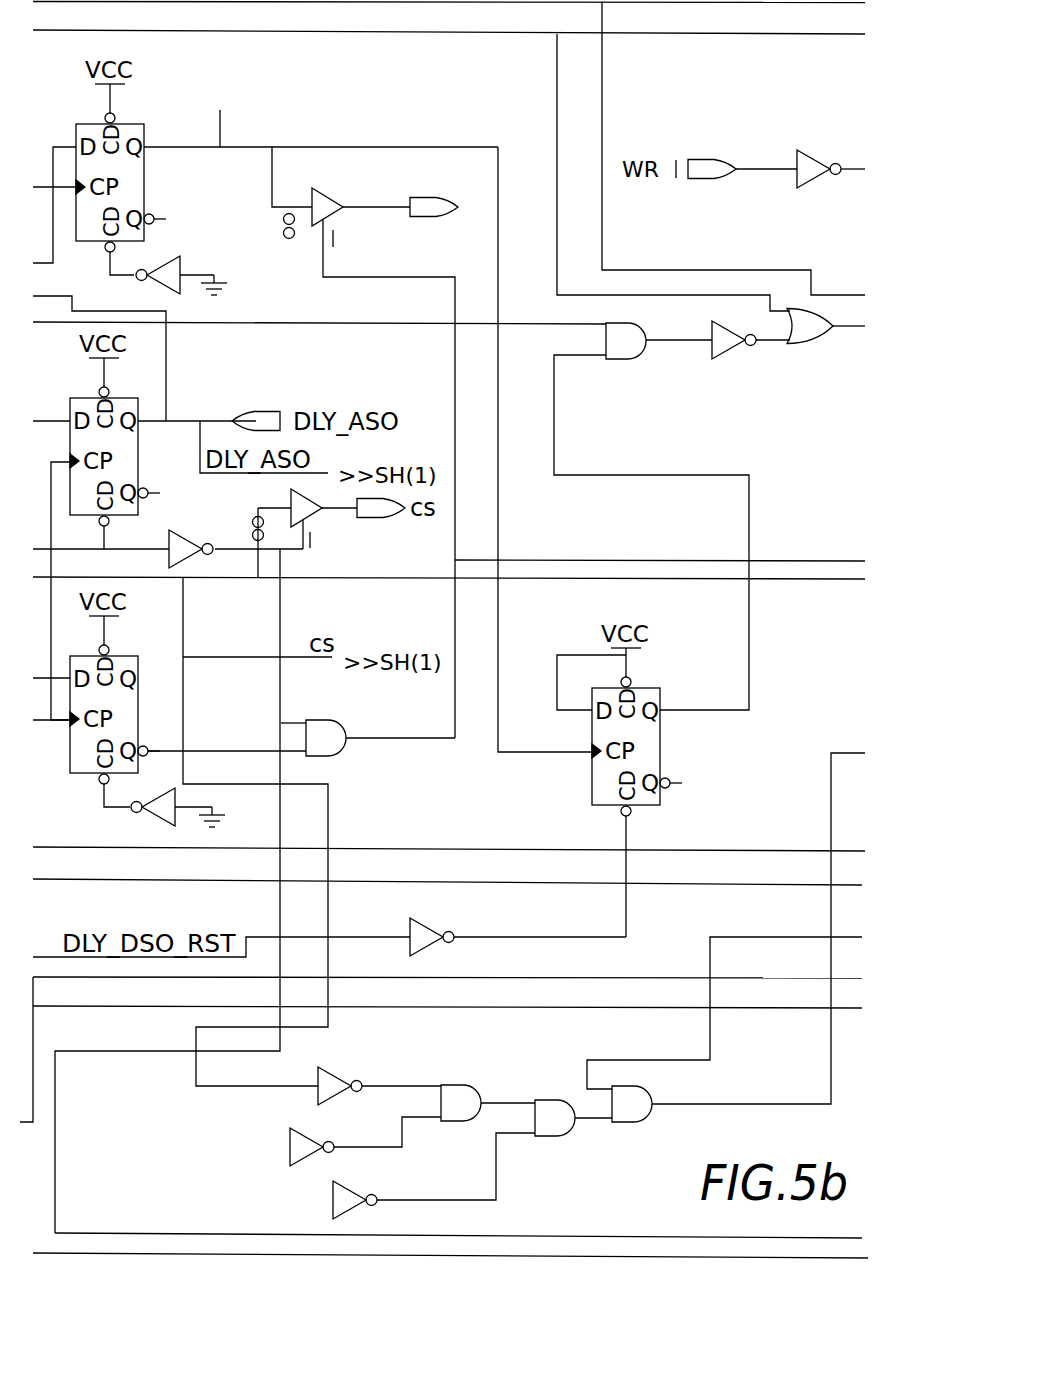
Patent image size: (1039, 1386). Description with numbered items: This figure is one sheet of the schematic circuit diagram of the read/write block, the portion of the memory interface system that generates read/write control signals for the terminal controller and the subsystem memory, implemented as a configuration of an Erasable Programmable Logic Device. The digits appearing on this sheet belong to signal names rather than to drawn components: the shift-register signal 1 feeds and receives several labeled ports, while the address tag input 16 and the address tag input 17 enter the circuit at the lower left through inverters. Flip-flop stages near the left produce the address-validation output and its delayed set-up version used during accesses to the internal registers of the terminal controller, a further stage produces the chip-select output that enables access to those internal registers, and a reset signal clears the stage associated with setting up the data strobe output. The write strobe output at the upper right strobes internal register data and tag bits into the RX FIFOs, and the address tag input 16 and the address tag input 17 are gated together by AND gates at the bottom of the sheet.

The shift register SH(1) output port ASO 1 is at (215, 110).
The address bit AB(16) input inverter 16 is at (290, 1147).
The address bit AB(17) input inverter 17 is at (333, 1200).